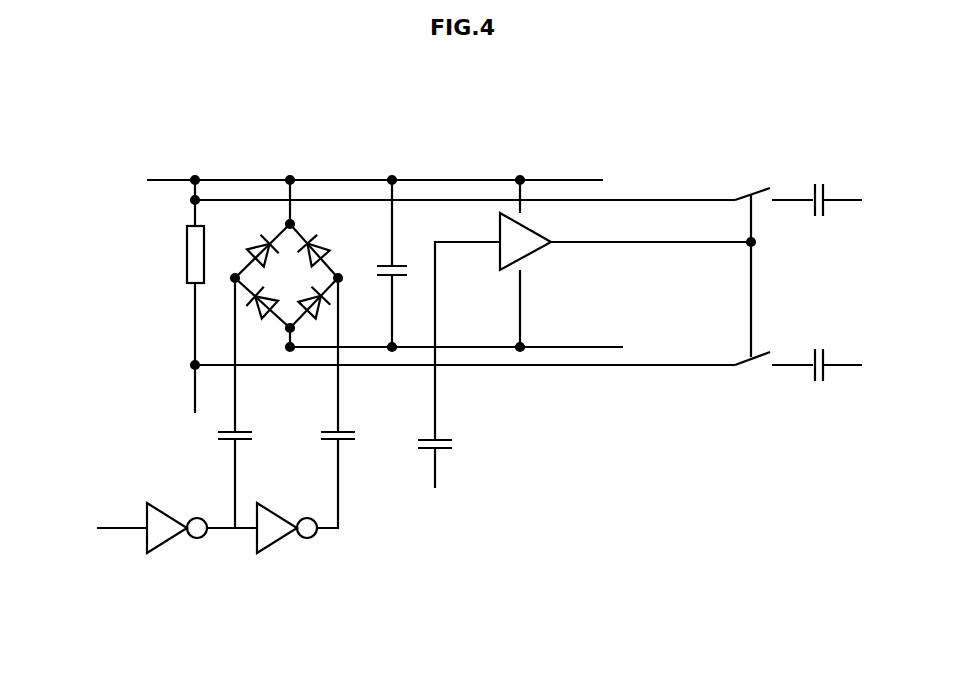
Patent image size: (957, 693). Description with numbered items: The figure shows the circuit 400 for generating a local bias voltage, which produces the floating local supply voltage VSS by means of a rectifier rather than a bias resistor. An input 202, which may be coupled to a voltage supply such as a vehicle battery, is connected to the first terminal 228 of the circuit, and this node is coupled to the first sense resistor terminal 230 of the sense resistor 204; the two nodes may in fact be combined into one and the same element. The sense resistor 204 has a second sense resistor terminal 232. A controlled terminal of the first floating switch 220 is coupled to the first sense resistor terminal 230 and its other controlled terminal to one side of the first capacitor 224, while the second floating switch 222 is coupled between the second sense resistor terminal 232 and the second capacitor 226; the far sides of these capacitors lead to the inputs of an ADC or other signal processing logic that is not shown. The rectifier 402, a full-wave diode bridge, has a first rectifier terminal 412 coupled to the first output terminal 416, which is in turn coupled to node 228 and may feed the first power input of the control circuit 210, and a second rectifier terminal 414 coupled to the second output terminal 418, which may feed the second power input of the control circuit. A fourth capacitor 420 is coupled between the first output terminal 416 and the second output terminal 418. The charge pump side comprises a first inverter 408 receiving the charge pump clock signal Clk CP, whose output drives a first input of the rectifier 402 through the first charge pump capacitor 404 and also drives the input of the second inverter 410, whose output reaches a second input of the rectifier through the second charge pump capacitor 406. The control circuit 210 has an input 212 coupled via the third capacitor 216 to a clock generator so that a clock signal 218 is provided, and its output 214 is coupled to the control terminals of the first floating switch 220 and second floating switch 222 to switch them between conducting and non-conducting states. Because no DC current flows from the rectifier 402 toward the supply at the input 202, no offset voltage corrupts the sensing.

The circuit for generating a local bias voltage 400 is at (619, 95).
The input 202 is at (150, 177).
The first terminal 228 is at (199, 179).
The first output terminal 416 is at (296, 178).
The first sense resistor terminal 230 is at (191, 201).
The sense resistor 204 is at (186, 258).
The second sense resistor terminal 232 is at (192, 366).
The rectifier 402 is at (286, 263).
The first rectifier terminal 412 is at (285, 226).
The second rectifier terminal 414 is at (286, 346).
The second output terminal 418 is at (294, 347).
The fourth capacitor 420 is at (389, 280).
The first charge pump capacitor 404 is at (216, 434).
The second charge pump capacitor 406 is at (322, 436).
The first inverter 408 is at (170, 548).
The second inverter 410 is at (282, 548).
The control circuit 210 is at (495, 222).
The input 212 is at (494, 250).
The control circuit output 214 is at (558, 245).
The third capacitor 216 is at (450, 444).
The clock signal 218 is at (436, 488).
The first floating switch 220 is at (756, 178).
The second floating switch 222 is at (753, 370).
The first capacitor 224 is at (820, 178).
The second capacitor 226 is at (820, 388).